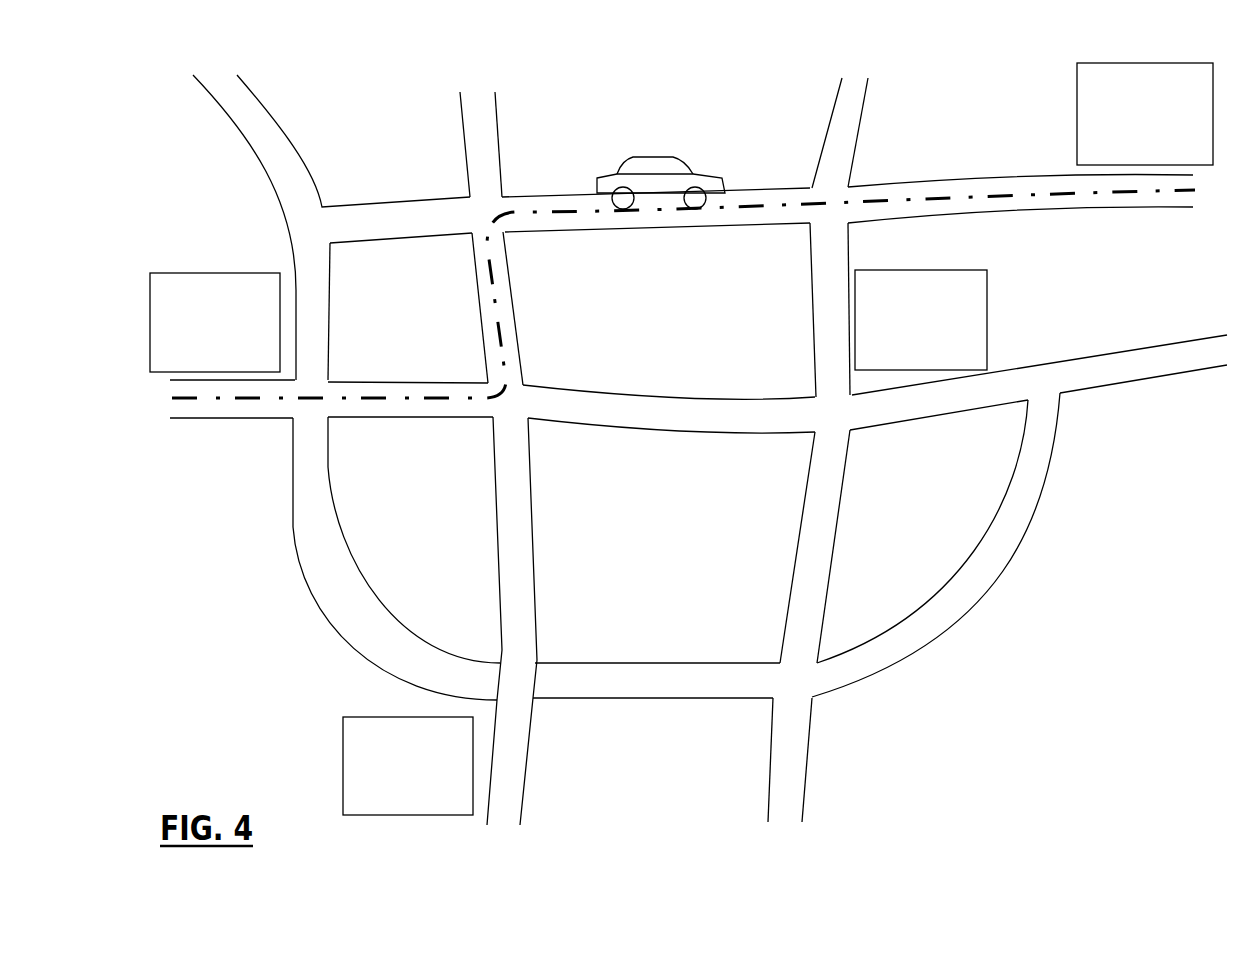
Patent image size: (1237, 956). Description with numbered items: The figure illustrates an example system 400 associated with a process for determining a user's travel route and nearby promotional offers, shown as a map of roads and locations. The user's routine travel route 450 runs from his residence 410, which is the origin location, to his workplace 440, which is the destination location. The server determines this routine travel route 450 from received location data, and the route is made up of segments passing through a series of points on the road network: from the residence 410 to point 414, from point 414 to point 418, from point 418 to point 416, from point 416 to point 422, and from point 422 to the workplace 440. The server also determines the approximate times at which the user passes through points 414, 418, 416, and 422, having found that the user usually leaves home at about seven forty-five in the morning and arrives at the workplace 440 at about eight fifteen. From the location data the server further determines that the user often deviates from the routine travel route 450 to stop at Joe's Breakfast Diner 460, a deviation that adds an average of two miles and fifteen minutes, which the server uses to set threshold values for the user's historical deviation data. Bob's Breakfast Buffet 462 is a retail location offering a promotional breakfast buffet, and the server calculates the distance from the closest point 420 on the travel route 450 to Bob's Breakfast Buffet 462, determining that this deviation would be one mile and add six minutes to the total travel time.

The system 400 is at (192, 801).
The residence 410 is at (199, 317).
The point 414 is at (331, 399).
The point 416 is at (491, 238).
The point 418 is at (661, 409).
The closest point 420 is at (512, 621).
The point 422 is at (818, 450).
The workplace 440 is at (1129, 112).
The routine travel route 450 is at (499, 294).
The Joe's Breakfast Diner 460 is at (408, 766).
The Bob's Breakfast Buffet 462 is at (904, 292).